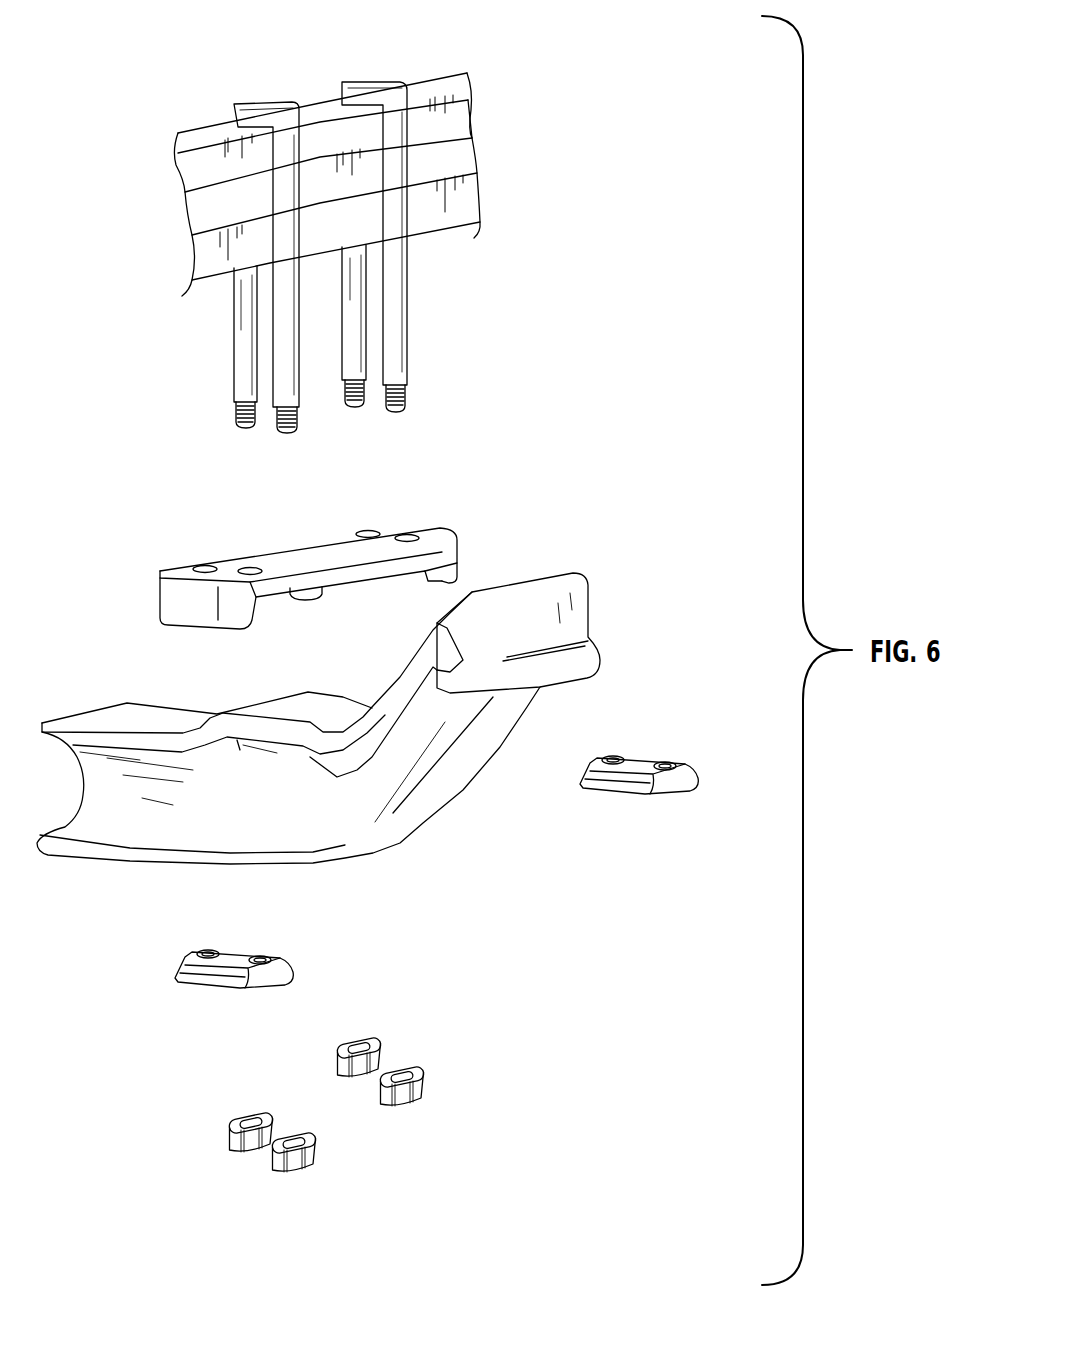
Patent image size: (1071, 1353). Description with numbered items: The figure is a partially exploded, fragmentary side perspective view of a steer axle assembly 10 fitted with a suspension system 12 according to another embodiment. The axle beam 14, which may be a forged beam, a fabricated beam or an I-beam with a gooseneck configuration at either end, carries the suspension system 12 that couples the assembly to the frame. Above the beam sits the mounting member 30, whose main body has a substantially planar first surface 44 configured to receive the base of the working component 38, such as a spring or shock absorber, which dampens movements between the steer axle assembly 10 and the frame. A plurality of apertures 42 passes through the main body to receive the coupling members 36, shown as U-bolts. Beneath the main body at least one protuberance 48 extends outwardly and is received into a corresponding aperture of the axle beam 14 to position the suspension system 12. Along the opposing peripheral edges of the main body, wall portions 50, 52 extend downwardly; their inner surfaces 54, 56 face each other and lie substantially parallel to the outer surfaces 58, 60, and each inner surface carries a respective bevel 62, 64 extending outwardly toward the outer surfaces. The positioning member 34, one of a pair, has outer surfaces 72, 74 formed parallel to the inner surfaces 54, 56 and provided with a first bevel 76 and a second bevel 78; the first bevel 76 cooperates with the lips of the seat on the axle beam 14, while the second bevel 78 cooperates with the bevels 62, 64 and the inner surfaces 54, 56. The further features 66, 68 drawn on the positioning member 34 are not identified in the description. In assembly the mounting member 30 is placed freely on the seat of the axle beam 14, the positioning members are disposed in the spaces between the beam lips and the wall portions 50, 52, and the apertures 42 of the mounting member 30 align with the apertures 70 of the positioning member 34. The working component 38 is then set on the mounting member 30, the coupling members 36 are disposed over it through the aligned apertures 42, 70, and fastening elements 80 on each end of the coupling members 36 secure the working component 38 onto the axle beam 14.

The steer axle assembly 10 is at (128, 106).
The suspension system 12 is at (205, 135).
The axle beam 14 is at (470, 790).
The mounting member 30 is at (256, 532).
The positioning member 34 is at (158, 958).
The coupling members 36 is at (400, 268).
The working component 38 is at (460, 108).
The apertures 42 is at (369, 530).
The first surface 44 is at (314, 548).
The protuberance 48 is at (318, 596).
The wall portion 50 is at (227, 637).
The wall portion 52 is at (397, 572).
The inner surface 54 is at (262, 605).
The inner surface 56 is at (426, 565).
The outer surface 58 is at (177, 603).
The outer surface 60 is at (460, 570).
The bevel 62 is at (243, 617).
The bevel 64 is at (425, 565).
The bolt hole 66 is at (233, 952).
The bottom surface 68 is at (285, 985).
The apertures 70 is at (259, 956).
The outer surface 72 is at (232, 968).
The outer surface 74 is at (283, 962).
The first bevel 76 is at (193, 978).
The second bevel 78 is at (291, 970).
The fastening elements 80 is at (382, 1044).